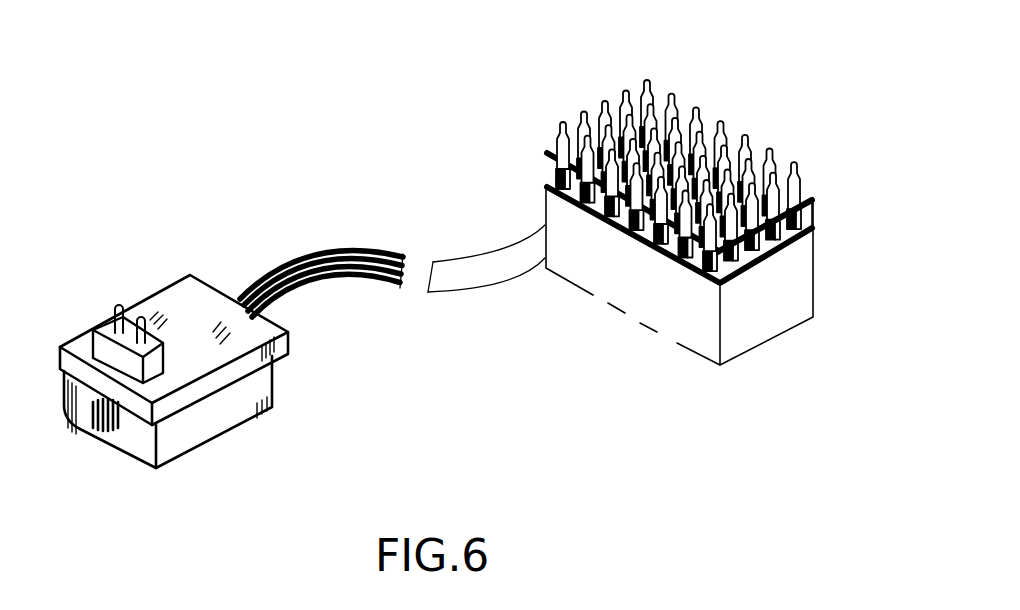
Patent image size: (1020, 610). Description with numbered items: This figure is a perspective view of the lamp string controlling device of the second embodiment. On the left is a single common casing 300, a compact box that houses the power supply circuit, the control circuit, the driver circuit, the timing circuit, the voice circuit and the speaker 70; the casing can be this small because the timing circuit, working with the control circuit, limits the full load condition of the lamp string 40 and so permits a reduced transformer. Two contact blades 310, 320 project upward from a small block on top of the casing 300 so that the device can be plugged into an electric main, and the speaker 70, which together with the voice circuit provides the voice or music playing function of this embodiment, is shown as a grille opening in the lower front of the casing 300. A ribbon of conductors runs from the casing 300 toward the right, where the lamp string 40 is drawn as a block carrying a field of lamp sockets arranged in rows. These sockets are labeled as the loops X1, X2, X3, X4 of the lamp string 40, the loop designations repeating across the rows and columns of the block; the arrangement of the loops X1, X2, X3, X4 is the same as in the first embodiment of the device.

The casing 300 is at (253, 407).
The contact blade 310 is at (139, 320).
The contact blade 320 is at (117, 314).
The speaker 70 is at (96, 423).
The lamp string 40 is at (808, 267).
The loop of the lamp string X1 is at (730, 133).
The loop of the lamp string X2 is at (707, 127).
The loop of the lamp string X3 is at (688, 110).
The loop of the lamp string X4 is at (672, 102).